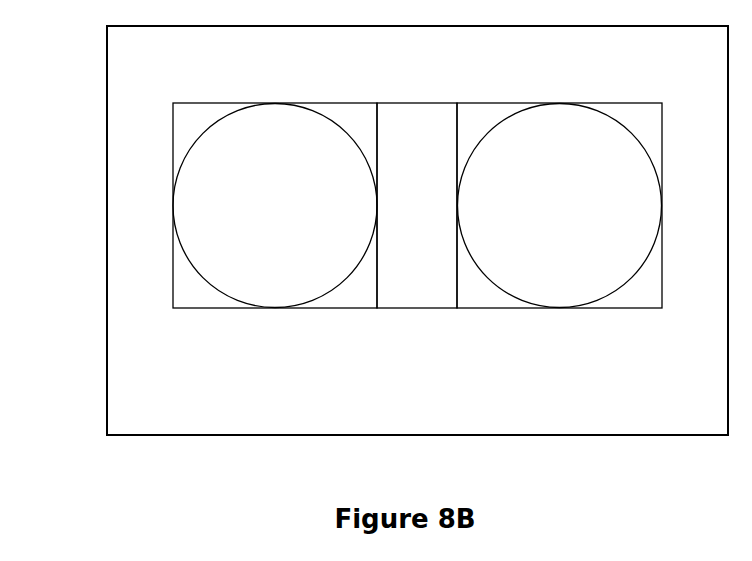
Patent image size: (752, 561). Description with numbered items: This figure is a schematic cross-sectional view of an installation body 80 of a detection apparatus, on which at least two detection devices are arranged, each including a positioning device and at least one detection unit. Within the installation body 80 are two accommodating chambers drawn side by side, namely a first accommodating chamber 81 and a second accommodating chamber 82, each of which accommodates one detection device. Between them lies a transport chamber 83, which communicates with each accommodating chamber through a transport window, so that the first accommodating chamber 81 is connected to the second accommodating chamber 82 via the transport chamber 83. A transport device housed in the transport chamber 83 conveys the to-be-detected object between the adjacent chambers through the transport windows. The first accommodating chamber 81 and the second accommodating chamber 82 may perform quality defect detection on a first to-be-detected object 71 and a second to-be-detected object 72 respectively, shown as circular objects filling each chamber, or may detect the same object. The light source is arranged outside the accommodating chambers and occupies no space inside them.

The installation body 80 is at (120, 376).
The first accommodating chamber 81 is at (352, 300).
The second accommodating chamber 82 is at (483, 300).
The transport chamber 83 is at (421, 128).
The first to-be-detected object 71 is at (271, 122).
The second to-be-detected object 72 is at (554, 123).